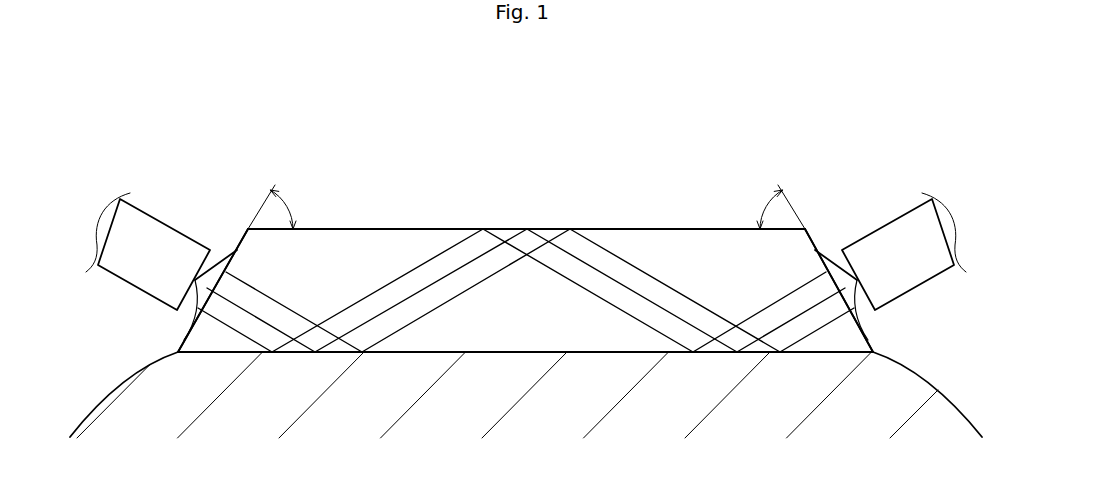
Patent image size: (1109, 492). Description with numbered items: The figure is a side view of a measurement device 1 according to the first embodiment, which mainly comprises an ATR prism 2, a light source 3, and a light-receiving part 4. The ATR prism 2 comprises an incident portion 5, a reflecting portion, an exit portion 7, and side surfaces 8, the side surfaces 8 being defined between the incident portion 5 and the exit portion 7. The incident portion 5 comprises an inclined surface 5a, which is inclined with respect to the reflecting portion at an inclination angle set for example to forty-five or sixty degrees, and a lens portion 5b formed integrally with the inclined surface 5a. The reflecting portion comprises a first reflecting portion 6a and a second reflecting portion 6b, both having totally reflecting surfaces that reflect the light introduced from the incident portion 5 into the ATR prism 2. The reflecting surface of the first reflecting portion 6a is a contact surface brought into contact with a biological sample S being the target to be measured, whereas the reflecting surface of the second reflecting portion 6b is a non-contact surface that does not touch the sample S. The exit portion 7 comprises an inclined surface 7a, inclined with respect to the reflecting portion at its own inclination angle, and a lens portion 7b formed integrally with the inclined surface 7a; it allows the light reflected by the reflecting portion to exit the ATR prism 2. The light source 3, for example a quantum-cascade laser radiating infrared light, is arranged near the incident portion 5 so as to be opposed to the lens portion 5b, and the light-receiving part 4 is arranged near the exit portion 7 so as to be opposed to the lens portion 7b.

The measurement device 1 is at (529, 272).
The ATR prism 2 is at (429, 222).
The light source 3 is at (120, 289).
The light-receiving part 4 is at (931, 290).
The incident portion 5 is at (212, 252).
The inclined surface 5a is at (237, 250).
The lens portion 5b is at (196, 278).
The first reflecting portion 6a is at (621, 355).
The second reflecting portion 6b is at (628, 226).
The exit portion 7 is at (840, 252).
The inclined surface 7a is at (816, 250).
The lens portion 7b is at (856, 278).
The side surfaces 8 is at (372, 242).
The sample S is at (935, 362).